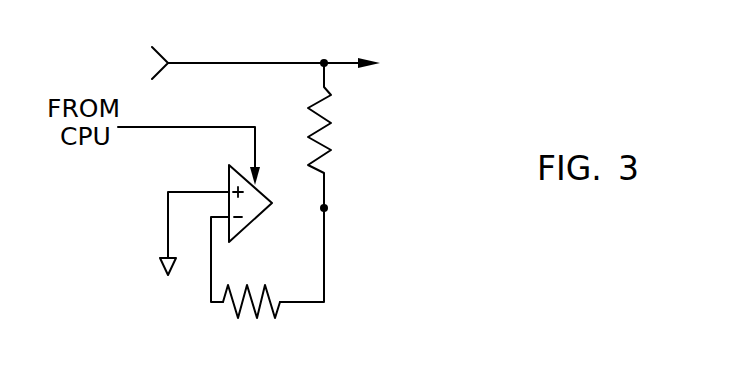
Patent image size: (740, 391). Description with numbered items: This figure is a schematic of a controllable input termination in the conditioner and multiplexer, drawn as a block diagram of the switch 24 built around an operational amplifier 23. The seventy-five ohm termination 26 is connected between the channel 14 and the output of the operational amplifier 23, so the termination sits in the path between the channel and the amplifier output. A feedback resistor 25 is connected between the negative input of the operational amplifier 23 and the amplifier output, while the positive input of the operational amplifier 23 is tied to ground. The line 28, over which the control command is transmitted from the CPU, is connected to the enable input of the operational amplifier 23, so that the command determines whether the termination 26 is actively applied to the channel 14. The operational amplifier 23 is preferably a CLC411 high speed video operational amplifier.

The channel 14 is at (222, 63).
The operational amplifier 23 is at (250, 223).
The switch 24 is at (186, 304).
The feedback resistor 25 is at (278, 304).
The 75 ohm termination 26 is at (320, 160).
The line 28 is at (185, 127).